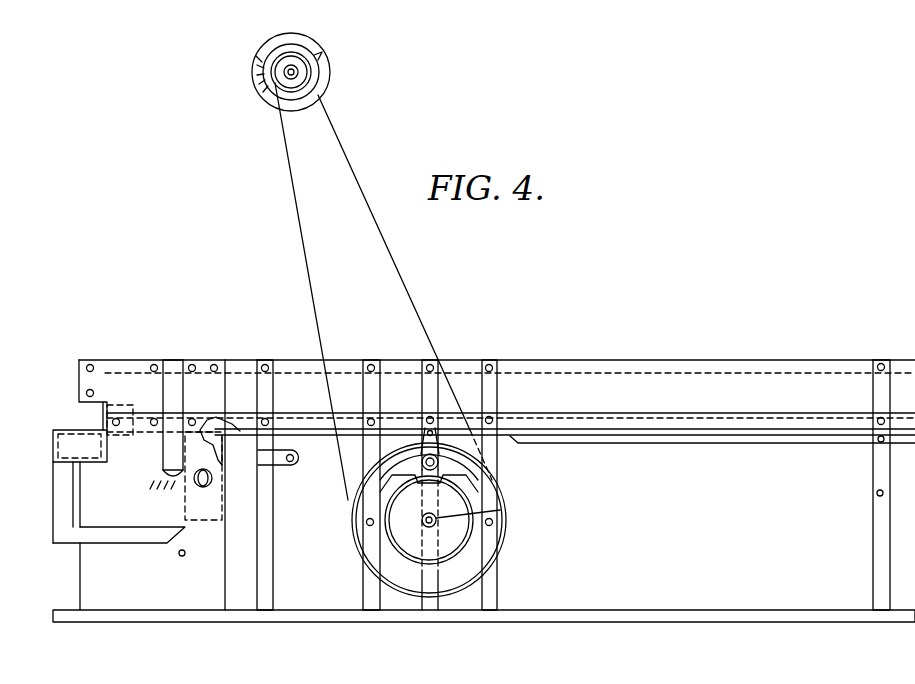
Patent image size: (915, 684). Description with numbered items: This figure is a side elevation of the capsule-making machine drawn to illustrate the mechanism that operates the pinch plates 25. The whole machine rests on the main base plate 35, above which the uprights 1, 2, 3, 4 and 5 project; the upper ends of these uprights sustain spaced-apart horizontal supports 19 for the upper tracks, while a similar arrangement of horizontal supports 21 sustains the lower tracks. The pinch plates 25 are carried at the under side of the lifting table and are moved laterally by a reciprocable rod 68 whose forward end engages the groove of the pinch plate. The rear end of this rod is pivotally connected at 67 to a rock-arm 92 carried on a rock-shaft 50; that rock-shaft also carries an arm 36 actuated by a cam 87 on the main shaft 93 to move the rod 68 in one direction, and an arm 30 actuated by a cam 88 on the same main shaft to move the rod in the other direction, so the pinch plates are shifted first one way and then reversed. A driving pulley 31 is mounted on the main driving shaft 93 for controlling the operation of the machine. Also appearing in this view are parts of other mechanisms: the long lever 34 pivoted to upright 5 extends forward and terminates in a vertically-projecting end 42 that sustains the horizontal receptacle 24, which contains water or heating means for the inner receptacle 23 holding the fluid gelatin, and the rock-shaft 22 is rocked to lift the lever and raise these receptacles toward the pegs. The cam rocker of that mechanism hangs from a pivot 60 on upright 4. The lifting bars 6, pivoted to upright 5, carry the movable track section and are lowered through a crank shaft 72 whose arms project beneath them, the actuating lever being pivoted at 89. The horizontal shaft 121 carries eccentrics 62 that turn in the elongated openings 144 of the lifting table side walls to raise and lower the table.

The upright 1 is at (266, 359).
The upright 2 is at (372, 359).
The upright 3 is at (438, 359).
The upright 4 is at (489, 359).
The upright 5 is at (884, 359).
The lifting bars 6 is at (708, 445).
The horizontal supports 19 is at (698, 360).
The horizontal supports 21 is at (712, 420).
The rock-shaft 22 is at (179, 556).
The inner receptacle 23 is at (58, 433).
The horizontal receptacle 24 is at (54, 450).
The pinch plates 25 is at (226, 447).
The arm 30 is at (433, 511).
The driving pulley 31 is at (357, 548).
The long lever 34 is at (111, 530).
The main base plate 35 is at (657, 609).
The arm 36 is at (426, 513).
The vertically-projecting end 42 is at (62, 491).
The rock-shaft 50 is at (424, 462).
The pivot 60 is at (494, 522).
The eccentrics 62 is at (201, 470).
The pivotal connection 67 is at (428, 430).
The reciprocable rod 68 is at (328, 430).
The crank shaft 72 is at (295, 458).
The cam 87 is at (442, 526).
The cam 88 is at (388, 507).
The pivot 89 is at (354, 531).
The rock-arm 92 is at (438, 460).
The main shaft 93 is at (500, 510).
The horizontal shaft 121 is at (203, 476).
The elongated openings 144 is at (194, 481).